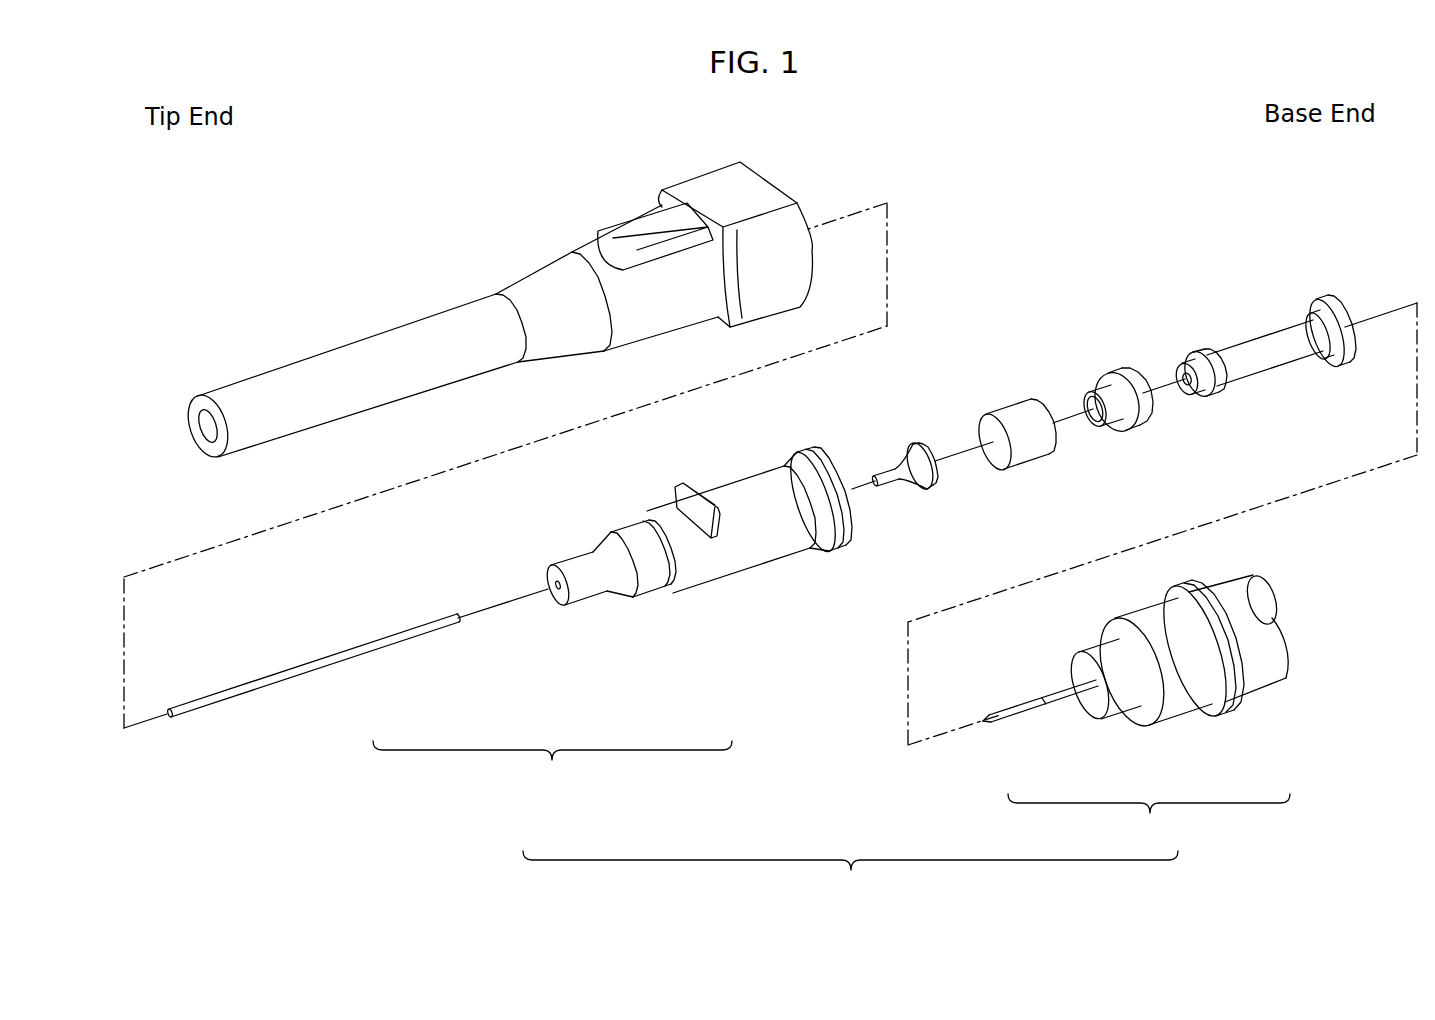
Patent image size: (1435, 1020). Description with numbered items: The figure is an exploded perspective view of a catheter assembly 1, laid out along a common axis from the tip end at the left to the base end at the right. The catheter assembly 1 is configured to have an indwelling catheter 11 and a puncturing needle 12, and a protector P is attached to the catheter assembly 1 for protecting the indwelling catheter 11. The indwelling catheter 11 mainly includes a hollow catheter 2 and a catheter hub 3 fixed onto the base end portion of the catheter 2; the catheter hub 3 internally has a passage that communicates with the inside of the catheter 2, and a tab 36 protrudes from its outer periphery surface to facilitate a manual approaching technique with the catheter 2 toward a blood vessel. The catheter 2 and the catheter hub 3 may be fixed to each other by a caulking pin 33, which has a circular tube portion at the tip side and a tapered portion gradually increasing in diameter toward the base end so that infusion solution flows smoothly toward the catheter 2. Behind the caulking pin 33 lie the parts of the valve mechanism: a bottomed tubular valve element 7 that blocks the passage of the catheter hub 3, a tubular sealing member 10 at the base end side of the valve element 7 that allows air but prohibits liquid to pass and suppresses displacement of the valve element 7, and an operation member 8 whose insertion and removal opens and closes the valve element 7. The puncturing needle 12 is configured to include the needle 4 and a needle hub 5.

The protector P is at (430, 325).
The catheter assembly 1 is at (851, 860).
The indwelling catheter 11 is at (552, 750).
The puncturing needle 12 is at (1150, 803).
The catheter 2 is at (373, 647).
The catheter hub 3 is at (692, 560).
The caulking pin 33 is at (907, 460).
The tab 36 is at (692, 487).
The valve element 7 is at (1022, 413).
The sealing member 10 is at (1115, 377).
The operation member 8 is at (1262, 347).
The needle 4 is at (1015, 717).
The needle hub 5 is at (1253, 677).